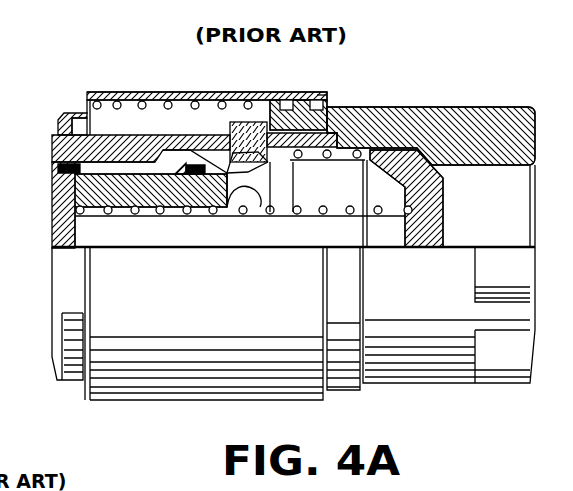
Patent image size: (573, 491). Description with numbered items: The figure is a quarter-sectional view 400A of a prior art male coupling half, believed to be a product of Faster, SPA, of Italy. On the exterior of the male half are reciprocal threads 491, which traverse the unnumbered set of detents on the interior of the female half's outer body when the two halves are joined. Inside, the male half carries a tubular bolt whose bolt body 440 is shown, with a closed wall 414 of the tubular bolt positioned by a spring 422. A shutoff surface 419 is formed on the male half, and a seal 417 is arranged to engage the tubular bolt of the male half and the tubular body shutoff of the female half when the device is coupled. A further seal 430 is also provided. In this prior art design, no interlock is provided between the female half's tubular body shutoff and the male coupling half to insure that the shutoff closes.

The quarter-sectional view of prior art male coupling half 400A is at (118, 84).
The reciprocal threads 491 is at (67, 128).
The bolt body 440 is at (162, 150).
The shutoff surface 419 is at (240, 128).
The seal 417 is at (52, 208).
The closed wall of tubular bolt 414 is at (72, 240).
The seal 430 is at (198, 212).
The spring 422 is at (297, 213).